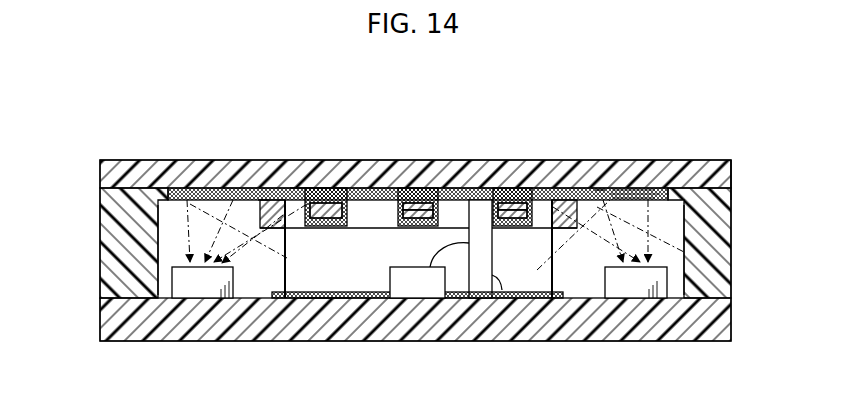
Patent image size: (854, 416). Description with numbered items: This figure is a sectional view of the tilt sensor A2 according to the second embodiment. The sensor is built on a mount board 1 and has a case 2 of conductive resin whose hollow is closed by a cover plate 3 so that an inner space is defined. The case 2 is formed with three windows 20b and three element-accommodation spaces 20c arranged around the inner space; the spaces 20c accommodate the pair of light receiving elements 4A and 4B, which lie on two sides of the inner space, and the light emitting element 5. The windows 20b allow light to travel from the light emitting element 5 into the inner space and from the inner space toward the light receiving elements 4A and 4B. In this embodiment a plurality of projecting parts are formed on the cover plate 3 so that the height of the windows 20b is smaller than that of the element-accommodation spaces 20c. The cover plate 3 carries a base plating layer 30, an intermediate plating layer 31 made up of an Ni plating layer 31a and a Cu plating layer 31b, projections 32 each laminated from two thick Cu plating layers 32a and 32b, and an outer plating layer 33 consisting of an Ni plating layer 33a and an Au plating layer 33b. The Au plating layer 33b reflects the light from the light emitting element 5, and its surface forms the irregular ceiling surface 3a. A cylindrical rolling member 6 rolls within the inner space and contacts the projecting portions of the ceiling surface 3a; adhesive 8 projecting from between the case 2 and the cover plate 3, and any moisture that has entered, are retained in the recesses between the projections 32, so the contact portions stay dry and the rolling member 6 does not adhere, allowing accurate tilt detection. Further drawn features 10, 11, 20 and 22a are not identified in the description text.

The mount board 1 is at (730, 320).
The case 2 is at (717, 233).
The cover plate 3 is at (713, 160).
The ceiling surface 3a is at (308, 189).
The light receiving element 4A is at (192, 290).
The light receiving element 4B is at (637, 284).
The light emitting element 5 is at (429, 324).
The rolling member 6 is at (488, 300).
The adhesive 8 is at (735, 194).
The mounting surface 10 is at (324, 300).
The wiring layer 11 is at (540, 298).
The frame 20 is at (303, 298).
The window 20b is at (262, 200).
The element-accommodation space 20c is at (168, 257).
The reflecting surface 22a is at (400, 298).
The base plating layer 30 is at (362, 192).
The intermediate plating layer 31 is at (454, 163).
The Ni plating layer 31a is at (402, 193).
The Cu plating layer 31b is at (413, 205).
The projection 32 is at (550, 164).
The Cu plating layer 32a is at (500, 193).
The Cu plating layer 32b is at (511, 205).
The outer plating layer 33 is at (659, 153).
The Ni plating layer 33a is at (620, 202).
The Au plating layer 33b is at (641, 206).
The tilt sensor A2 is at (738, 153).